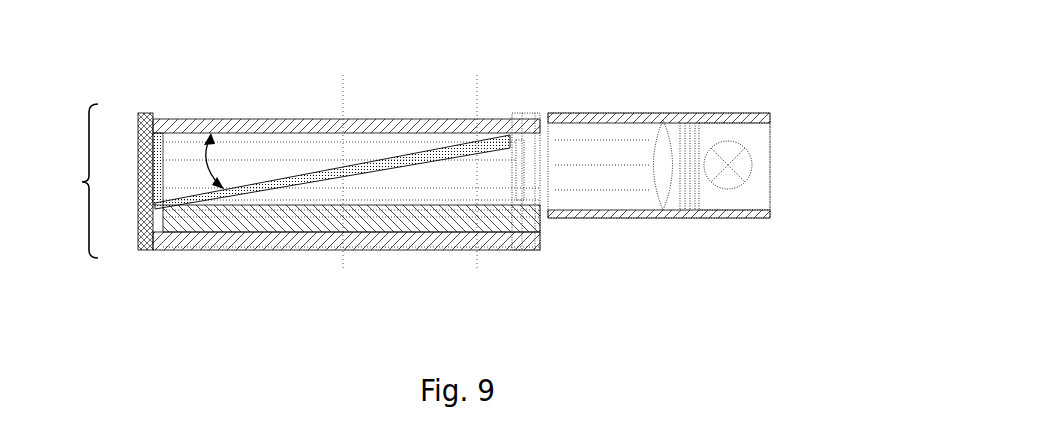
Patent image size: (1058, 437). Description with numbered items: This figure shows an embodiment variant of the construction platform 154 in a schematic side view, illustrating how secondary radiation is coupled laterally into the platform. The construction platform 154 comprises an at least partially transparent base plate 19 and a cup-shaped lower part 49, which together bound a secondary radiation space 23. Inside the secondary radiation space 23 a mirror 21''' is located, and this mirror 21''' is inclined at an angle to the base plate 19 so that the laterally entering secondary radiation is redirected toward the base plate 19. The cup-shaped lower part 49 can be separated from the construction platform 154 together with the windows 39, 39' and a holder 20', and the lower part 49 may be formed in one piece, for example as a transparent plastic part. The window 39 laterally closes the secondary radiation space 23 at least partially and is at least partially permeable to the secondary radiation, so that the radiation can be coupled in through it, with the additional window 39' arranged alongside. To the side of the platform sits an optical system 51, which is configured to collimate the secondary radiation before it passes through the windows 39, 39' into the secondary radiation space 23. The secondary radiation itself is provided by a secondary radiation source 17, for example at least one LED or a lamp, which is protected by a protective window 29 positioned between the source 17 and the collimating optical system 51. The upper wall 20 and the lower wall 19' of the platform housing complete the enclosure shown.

The construction platform 154 is at (82, 182).
The cup-shaped lower part 49 is at (146, 261).
The top wall of housing 20 is at (346, 90).
The holder 20' is at (135, 111).
The base plate 19 is at (351, 266).
The bottom wall of housing 19' is at (346, 278).
The secondary radiation space 23 is at (442, 190).
The mirror 21''' is at (332, 128).
The window 39 is at (549, 218).
The additional window 39' is at (483, 120).
The optical system 51 is at (690, 88).
The protective window 29 is at (690, 188).
The secondary radiation source 17 is at (743, 163).